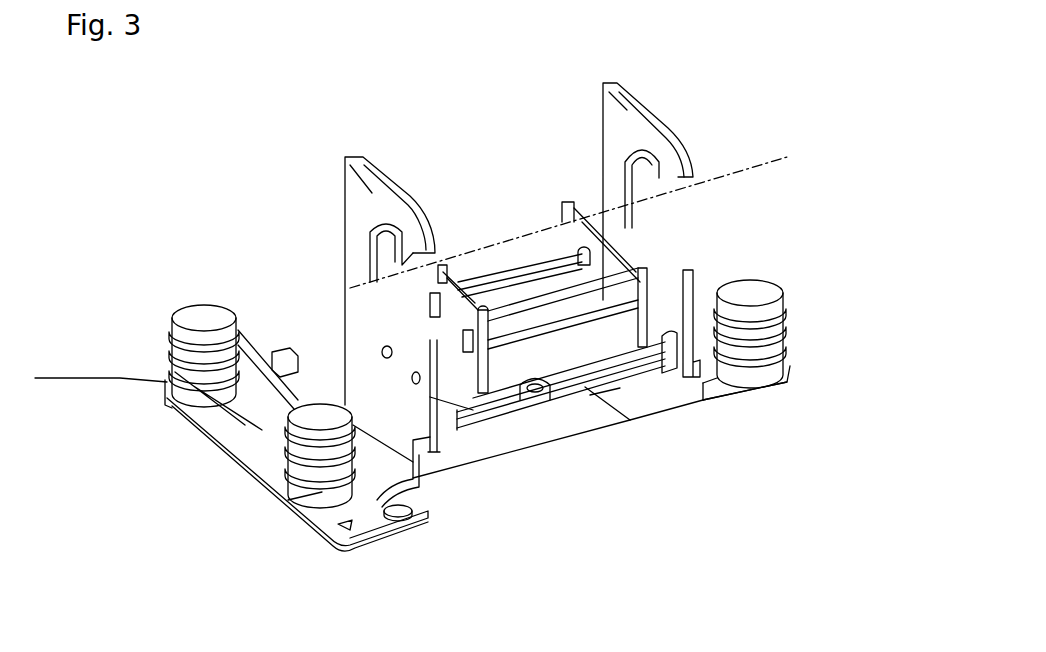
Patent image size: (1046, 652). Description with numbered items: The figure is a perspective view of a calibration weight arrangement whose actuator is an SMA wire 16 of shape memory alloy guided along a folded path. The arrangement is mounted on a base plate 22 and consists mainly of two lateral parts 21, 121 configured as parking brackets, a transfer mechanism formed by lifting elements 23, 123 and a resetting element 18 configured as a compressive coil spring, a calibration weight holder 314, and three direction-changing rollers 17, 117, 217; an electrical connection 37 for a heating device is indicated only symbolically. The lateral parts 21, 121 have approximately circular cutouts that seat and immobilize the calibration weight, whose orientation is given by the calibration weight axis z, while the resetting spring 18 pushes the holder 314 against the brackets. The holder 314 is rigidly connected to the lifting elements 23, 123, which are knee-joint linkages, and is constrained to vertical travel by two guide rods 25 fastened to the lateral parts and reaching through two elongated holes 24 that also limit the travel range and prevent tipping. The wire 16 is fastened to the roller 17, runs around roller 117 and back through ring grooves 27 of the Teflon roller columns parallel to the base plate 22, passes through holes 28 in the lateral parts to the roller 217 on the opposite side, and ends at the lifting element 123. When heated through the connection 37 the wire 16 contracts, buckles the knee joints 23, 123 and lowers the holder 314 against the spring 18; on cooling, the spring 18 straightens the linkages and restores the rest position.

The calibration weight axis z is at (575, 216).
The SMA wire 16 is at (262, 340).
The direction-changing roller 17 is at (195, 318).
The resetting element 18 is at (585, 405).
The lateral part 21 is at (345, 160).
The base plate 22 is at (372, 525).
The lifting element 23 is at (505, 405).
The elongated hole 24 is at (435, 302).
The guide rod 25 is at (460, 395).
The ring groove 27 is at (170, 332).
The hole 28 is at (436, 452).
The electrical connection 37 is at (115, 378).
The direction-changing roller 117 is at (318, 497).
The lateral part 121 is at (625, 123).
The lifting element 123 is at (605, 395).
The direction-changing roller 217 is at (787, 382).
The calibration weight holder 314 is at (553, 300).